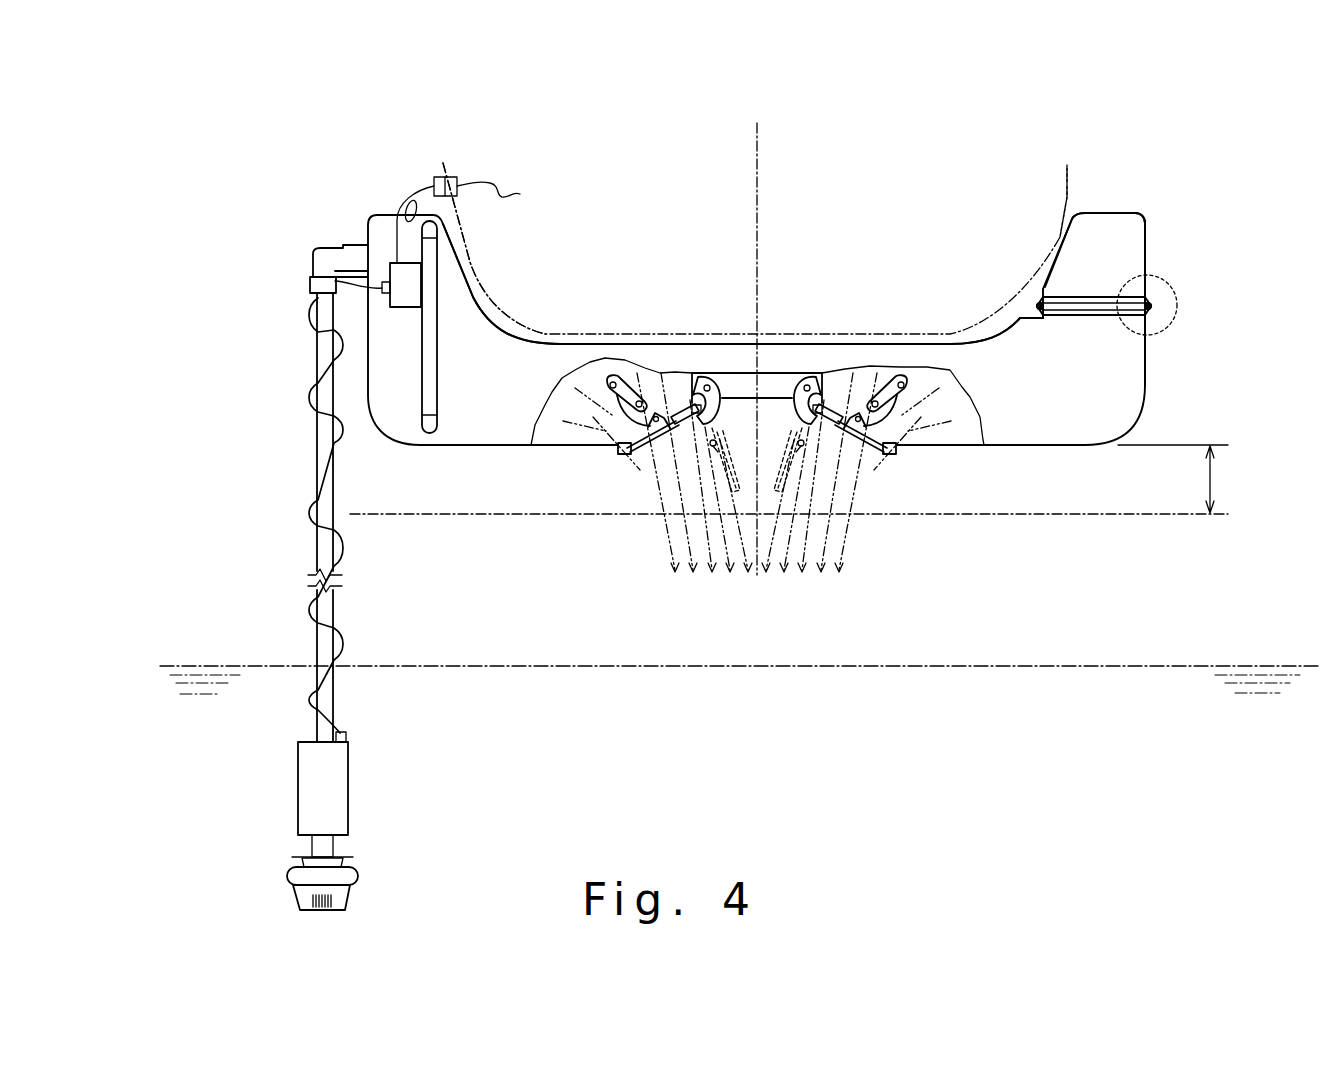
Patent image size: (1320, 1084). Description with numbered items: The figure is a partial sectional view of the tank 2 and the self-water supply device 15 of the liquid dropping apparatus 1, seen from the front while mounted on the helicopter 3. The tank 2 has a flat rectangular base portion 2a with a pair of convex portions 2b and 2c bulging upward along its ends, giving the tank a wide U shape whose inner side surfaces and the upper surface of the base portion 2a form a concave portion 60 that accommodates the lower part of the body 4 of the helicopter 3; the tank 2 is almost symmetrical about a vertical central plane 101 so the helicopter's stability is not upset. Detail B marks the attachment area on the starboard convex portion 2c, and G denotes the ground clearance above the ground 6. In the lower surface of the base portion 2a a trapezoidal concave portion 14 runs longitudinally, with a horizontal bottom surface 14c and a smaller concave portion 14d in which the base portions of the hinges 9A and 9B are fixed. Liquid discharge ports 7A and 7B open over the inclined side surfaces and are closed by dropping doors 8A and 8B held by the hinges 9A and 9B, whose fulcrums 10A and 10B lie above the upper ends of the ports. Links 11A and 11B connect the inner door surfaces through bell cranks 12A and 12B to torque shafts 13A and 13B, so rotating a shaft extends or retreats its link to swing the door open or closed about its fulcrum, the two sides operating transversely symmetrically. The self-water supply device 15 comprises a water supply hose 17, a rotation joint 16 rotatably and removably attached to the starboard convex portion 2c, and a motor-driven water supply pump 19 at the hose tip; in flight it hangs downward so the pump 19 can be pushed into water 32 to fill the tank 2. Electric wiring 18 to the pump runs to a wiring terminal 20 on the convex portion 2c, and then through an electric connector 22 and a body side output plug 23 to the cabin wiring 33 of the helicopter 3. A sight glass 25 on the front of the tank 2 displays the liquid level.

The water jet propulsion boat 1 is at (1200, 332).
The tank 2 is at (475, 447).
The base portion 2a is at (1118, 376).
The convex portion 2b is at (1118, 233).
The starboard convex portion 2c is at (455, 305).
The helicopter 3 is at (1068, 183).
The body 4 is at (1067, 197).
The ground 6 is at (380, 513).
The port liquid discharge port 7A is at (884, 447).
The starboard liquid discharge port 7B is at (630, 447).
The port dropping door 8A is at (861, 440).
The starboard dropping door 8B is at (653, 440).
The hinge 9A is at (821, 420).
The hinge 9B is at (693, 420).
The fulcrum 10A is at (818, 373).
The fulcrum 10B is at (693, 373).
The link 11A is at (891, 420).
The link 11B is at (623, 420).
The bell crank 12A is at (906, 408).
The bell crank 12B is at (608, 408).
The torque shaft 13A is at (885, 373).
The torque shaft 13B is at (622, 373).
The concave portion 14 is at (760, 417).
The bottom surface 14c is at (773, 373).
The concave portion 14d is at (748, 373).
The self-water supply device 15 is at (313, 557).
The rotation joint 16 is at (352, 245).
The water supply hose 17 is at (313, 480).
The electric wiring 18 is at (303, 617).
The motor-driven water supply pump 19 is at (292, 875).
The wiring terminal 20 is at (403, 300).
The electric connector 22 is at (433, 180).
The body side output plug 23 is at (448, 167).
The sight glass 25 is at (420, 357).
The water 32 is at (1243, 666).
The cabin wiring 33 is at (500, 187).
The concave portion 60 is at (1003, 323).
The vertical central plane 101 is at (758, 148).
The tie bar detail B is at (1170, 282).
The ground clearance G is at (1176, 479).